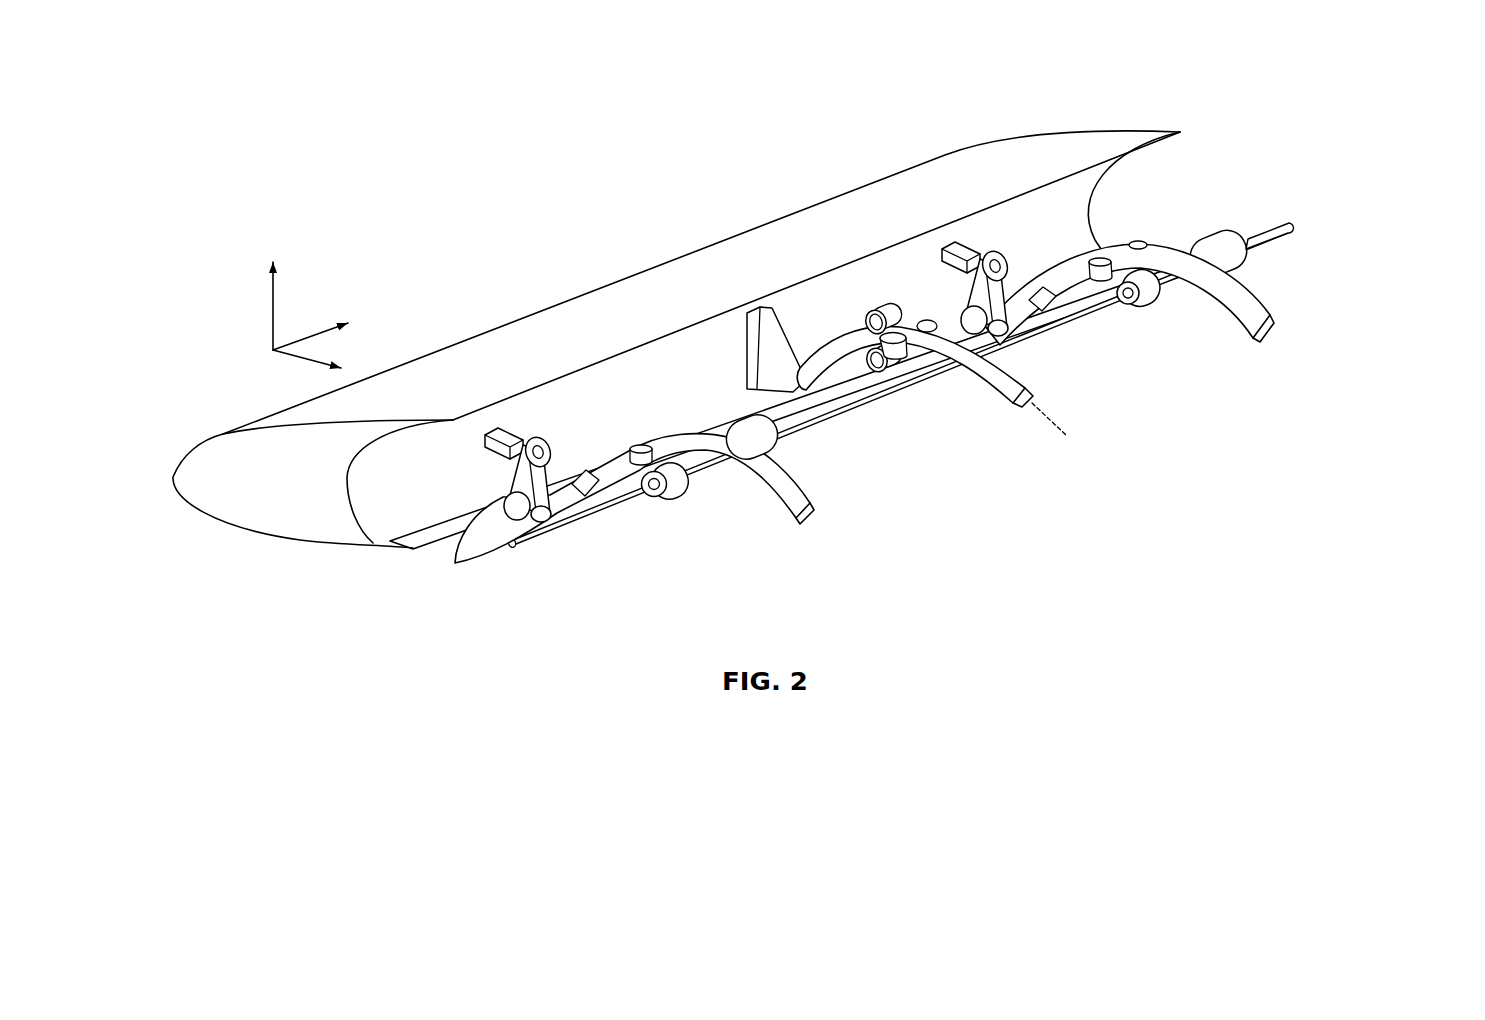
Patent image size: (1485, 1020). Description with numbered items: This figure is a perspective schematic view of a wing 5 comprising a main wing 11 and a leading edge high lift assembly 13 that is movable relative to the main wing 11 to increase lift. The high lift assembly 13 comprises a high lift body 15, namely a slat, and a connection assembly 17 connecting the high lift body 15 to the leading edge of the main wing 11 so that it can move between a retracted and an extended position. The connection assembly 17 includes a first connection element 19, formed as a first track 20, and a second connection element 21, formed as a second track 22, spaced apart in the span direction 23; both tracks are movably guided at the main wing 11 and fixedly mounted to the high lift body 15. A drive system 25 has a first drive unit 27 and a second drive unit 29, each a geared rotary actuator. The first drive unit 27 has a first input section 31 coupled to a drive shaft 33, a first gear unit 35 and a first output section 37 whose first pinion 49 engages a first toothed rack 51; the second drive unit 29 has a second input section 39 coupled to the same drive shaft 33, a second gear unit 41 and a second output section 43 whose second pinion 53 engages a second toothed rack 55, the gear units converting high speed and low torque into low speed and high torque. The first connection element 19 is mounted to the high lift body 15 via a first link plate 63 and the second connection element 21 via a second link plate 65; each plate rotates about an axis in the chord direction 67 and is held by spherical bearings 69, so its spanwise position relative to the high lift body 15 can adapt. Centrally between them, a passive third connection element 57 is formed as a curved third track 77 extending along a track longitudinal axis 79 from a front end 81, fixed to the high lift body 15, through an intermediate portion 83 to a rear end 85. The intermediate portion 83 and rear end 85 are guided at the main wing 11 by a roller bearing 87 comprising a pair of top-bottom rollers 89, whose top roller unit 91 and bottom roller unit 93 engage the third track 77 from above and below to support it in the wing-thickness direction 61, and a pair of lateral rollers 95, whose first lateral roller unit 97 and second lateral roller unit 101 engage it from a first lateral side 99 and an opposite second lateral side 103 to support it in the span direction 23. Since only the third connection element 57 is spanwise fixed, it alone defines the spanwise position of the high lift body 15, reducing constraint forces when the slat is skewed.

The wing 5 is at (188, 160).
The main wing 11 is at (1149, 419).
The high lift assembly 13 is at (1262, 84).
The high lift body 15 is at (736, 275).
The connection assembly 17 is at (1332, 199).
The first connection element 19 is at (634, 498).
The first track 20 is at (760, 485).
The second connection element 21 is at (1129, 320).
The second track 22 is at (1243, 328).
The span direction 23 is at (313, 334).
The drive system 25 is at (906, 431).
The first drive unit 27 is at (651, 525).
The second drive unit 29 is at (1127, 321).
The first input section 31 is at (745, 430).
The drive shaft 33 is at (1283, 243).
The first gear unit 35 is at (725, 437).
The first output section 37 is at (640, 506).
The second input section 39 is at (1248, 230).
The second gear unit 41 is at (1193, 256).
The second output section 43 is at (1147, 308).
The first pinion 49 is at (674, 502).
The first toothed rack 51 is at (630, 470).
The second pinion 53 is at (1158, 304).
The second toothed rack 55 is at (1086, 290).
The third connection element 57 is at (915, 401).
The wing-thickness direction 61 is at (271, 292).
The first link plate 63 is at (527, 488).
The second link plate 65 is at (980, 295).
The chord direction 67 is at (306, 360).
The spherical bearings 69 is at (549, 441).
The third track 77 is at (993, 400).
The track longitudinal axis 79 is at (1053, 423).
The front end 81 is at (802, 333).
The intermediate portion 83 is at (930, 356).
The rear end 85 is at (1018, 365).
The roller bearing 87 is at (862, 277).
The pair of top-bottom rollers 89 is at (862, 277).
The top roller unit 91 is at (889, 310).
The bottom roller unit 93 is at (868, 370).
The pair of lateral rollers 95 is at (907, 410).
The first lateral roller unit 97 is at (898, 368).
The first lateral side 99 is at (102, 476).
The second lateral roller unit 101 is at (922, 319).
The second lateral side 103 is at (1427, 242).